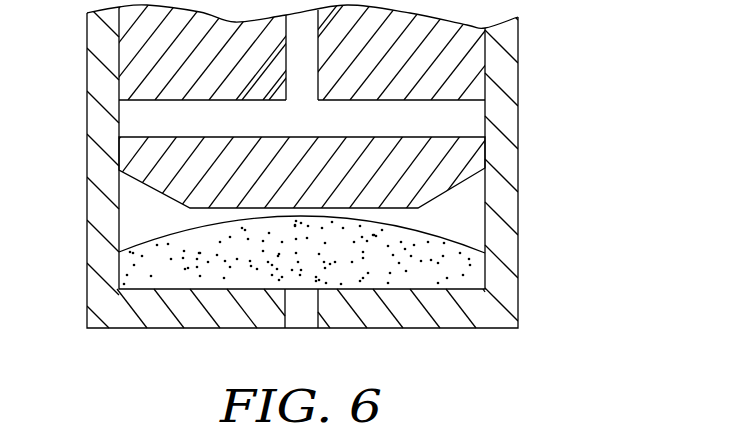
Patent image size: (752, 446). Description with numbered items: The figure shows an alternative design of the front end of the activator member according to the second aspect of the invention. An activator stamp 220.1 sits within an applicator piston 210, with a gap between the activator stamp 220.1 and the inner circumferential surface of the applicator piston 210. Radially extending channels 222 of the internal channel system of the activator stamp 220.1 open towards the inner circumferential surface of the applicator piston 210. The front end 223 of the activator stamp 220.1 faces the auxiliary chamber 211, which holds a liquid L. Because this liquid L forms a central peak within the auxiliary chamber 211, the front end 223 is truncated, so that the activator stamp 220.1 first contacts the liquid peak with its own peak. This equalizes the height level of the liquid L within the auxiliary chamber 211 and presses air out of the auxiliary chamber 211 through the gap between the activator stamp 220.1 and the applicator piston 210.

The applicator piston 210 is at (507, 203).
The auxiliary chamber 211 is at (475, 238).
The activator stamp 220.1 is at (475, 58).
The channels 222 is at (478, 110).
The front end 223 is at (467, 152).
The liquid L is at (478, 277).